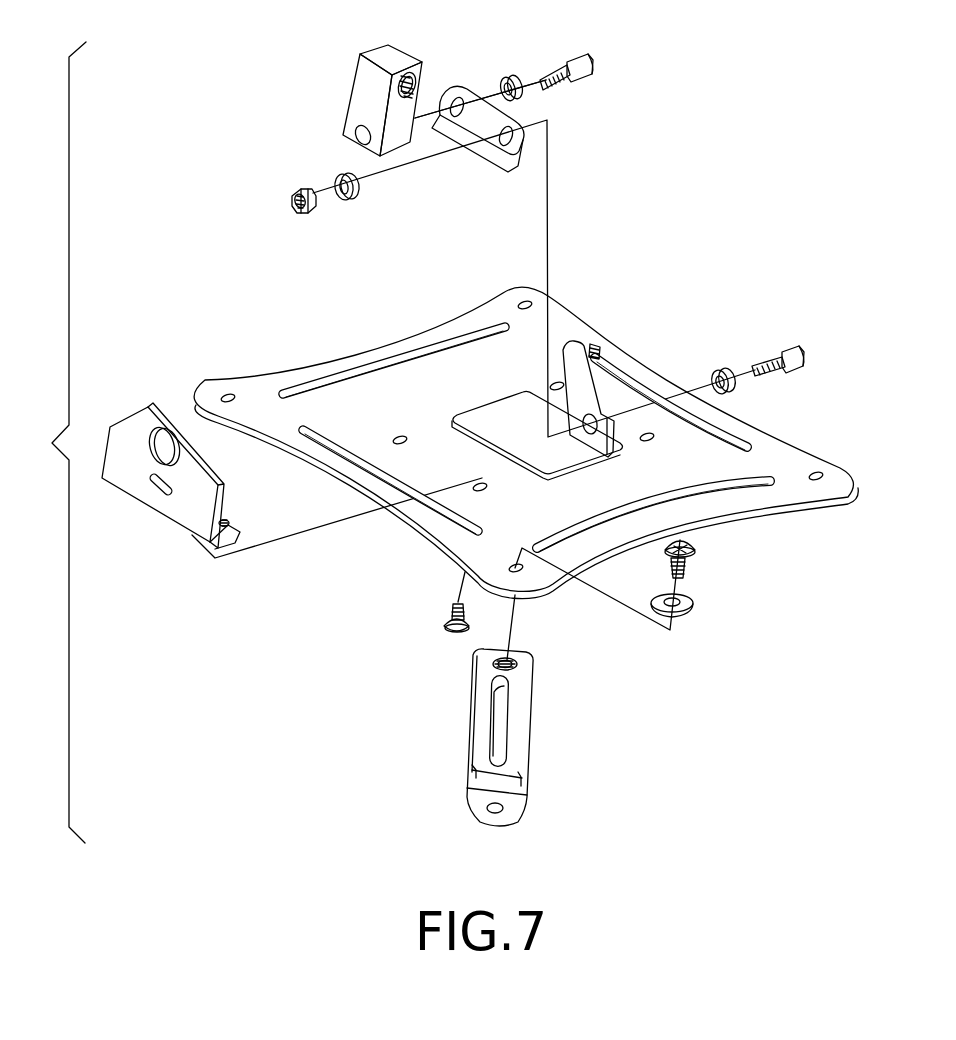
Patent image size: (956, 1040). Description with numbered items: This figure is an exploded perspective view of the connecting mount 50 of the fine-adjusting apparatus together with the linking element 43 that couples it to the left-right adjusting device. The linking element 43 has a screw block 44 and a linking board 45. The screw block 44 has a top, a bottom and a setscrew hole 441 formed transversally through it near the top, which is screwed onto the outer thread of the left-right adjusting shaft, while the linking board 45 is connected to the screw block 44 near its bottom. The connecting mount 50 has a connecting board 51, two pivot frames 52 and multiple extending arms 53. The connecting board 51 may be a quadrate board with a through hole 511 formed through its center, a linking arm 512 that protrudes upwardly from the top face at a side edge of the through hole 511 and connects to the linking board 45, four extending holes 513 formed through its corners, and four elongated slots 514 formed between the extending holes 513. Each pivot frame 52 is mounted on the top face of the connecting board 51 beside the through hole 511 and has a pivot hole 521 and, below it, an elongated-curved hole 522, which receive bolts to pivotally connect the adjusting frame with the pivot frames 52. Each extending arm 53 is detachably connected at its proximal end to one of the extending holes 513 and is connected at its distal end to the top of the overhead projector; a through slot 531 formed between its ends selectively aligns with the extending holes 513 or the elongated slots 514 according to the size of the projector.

The linking element 43 is at (345, 218).
The screw block 44 is at (390, 99).
The setscrew hole 441 is at (412, 86).
The linking board 45 is at (490, 165).
The connecting mount 50 is at (469, 556).
The connecting board 51 is at (526, 459).
The through hole 511 is at (462, 415).
The linking arm 512 is at (573, 345).
The extending hole 513 is at (522, 570).
The elongated slot 514 is at (734, 485).
The pivot frame 52 is at (160, 482).
The pivot hole 521 is at (162, 432).
The elongated-curved hole 522 is at (150, 481).
The extending arm 53 is at (509, 737).
The through slot 531 is at (497, 713).